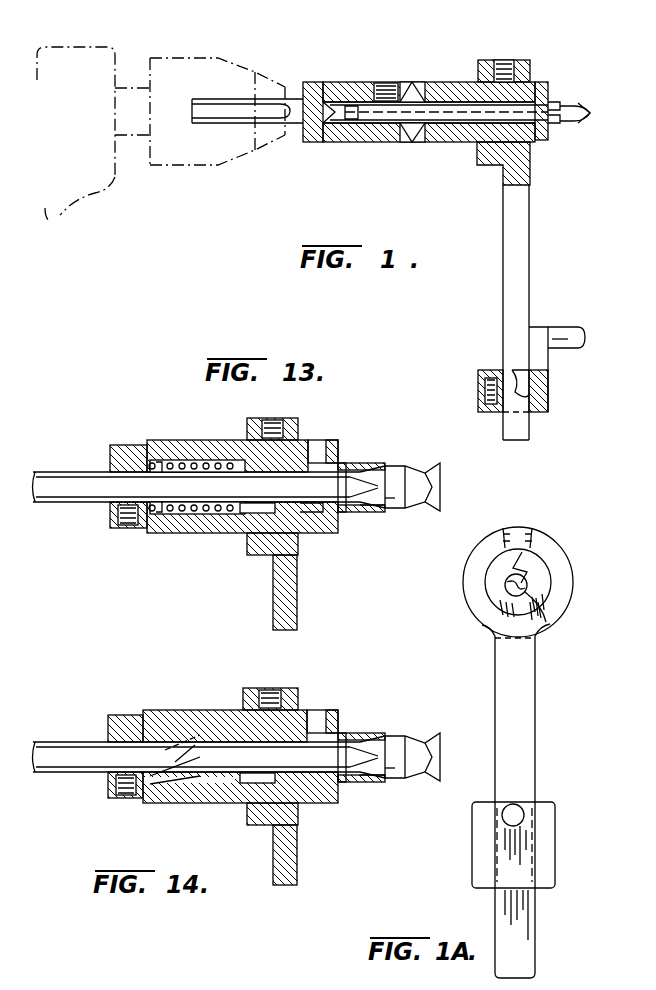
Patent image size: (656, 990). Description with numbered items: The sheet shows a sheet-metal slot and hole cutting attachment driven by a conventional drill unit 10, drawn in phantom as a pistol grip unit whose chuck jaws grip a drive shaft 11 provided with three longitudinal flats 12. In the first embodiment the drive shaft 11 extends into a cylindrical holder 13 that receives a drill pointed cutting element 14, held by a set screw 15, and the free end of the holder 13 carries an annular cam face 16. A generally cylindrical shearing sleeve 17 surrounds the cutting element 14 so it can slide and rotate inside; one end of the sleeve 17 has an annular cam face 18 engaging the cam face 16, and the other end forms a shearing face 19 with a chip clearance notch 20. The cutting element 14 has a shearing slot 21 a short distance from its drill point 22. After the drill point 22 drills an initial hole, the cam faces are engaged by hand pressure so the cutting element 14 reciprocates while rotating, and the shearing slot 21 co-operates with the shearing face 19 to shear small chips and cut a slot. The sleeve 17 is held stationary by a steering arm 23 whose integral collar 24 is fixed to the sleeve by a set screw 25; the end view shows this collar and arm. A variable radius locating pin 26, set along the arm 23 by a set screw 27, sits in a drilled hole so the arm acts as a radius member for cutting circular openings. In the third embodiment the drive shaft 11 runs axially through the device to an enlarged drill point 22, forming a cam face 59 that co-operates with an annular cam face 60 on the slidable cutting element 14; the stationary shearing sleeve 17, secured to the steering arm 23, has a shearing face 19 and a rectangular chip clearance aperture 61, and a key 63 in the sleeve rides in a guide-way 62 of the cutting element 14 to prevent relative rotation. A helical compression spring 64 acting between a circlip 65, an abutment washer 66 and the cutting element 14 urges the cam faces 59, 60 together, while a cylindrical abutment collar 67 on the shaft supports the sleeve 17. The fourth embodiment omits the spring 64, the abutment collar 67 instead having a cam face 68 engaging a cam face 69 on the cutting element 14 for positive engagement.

In FIG. 1, the drill unit 10 is at (118, 180).
In FIG. 1, the drive shaft 11 is at (270, 120).
In FIG. 13, the drive shaft 11 is at (48, 480).
In FIG. 14, the drive shaft 11 is at (48, 750).
In FIG. 1, the longitudinal flats 12 is at (236, 112).
In FIG. 1, the cylindrical holder 13 is at (312, 134).
In FIG. 1, the cutting element 14 is at (440, 108).
In FIG. 13, the cutting element 14 is at (326, 512).
In FIG. 1, the set screw 15 is at (388, 86).
In FIG. 1, the annular cam face 16 is at (408, 96).
In FIG. 1, the shearing sleeve 17 is at (455, 132).
In FIG. 13, the shearing sleeve 17 is at (175, 520).
In FIG. 14, the shearing sleeve 17 is at (183, 725).
In FIG. 1, the annular cam face 18 is at (410, 130).
In FIG. 1A, the shearing face 19 is at (535, 572).
In FIG. 13, the shearing face 19 is at (341, 463).
In FIG. 14, the shearing face 19 is at (341, 733).
In FIG. 1, the chip clearance notch 20 is at (552, 130).
In FIG. 1A, the chip clearance notch 20 is at (543, 623).
In FIG. 1, the shearing slot 21 is at (565, 118).
In FIG. 13, the shearing slot 21 is at (350, 466).
In FIG. 14, the shearing slot 21 is at (348, 736).
In FIG. 1, the drill point 22 is at (592, 113).
In FIG. 1A, the drill point 22 is at (520, 592).
In FIG. 13, the drill point 22 is at (432, 470).
In FIG. 14, the drill point 22 is at (432, 740).
In FIG. 1, the steering arm 23 is at (525, 232).
In FIG. 1A, the steering arm 23 is at (515, 727).
In FIG. 13, the steering arm 23 is at (273, 605).
In FIG. 14, the steering arm 23 is at (297, 872).
In FIG. 1, the collar 24 is at (530, 70).
In FIG. 1A, the collar 24 is at (540, 548).
In FIG. 13, the collar 24 is at (250, 428).
In FIG. 14, the collar 24 is at (258, 700).
In FIG. 1, the set screw 25 is at (505, 66).
In FIG. 1, the locating pin 26 is at (570, 335).
In FIG. 1A, the locating pin 26 is at (525, 812).
In FIG. 1, the set screw 27 is at (490, 372).
In FIG. 13, the cam face 59 is at (388, 512).
In FIG. 14, the cam face 59 is at (390, 762).
In FIG. 13, the annular cam face 60 is at (366, 512).
In FIG. 14, the annular cam face 60 is at (360, 783).
In FIG. 13, the chip clearance aperture 61 is at (320, 450).
In FIG. 14, the chip clearance aperture 61 is at (315, 720).
In FIG. 13, the guide-way 62 is at (275, 545).
In FIG. 14, the guide-way 62 is at (275, 815).
In FIG. 13, the key 63 is at (250, 514).
In FIG. 14, the key 63 is at (255, 785).
In FIG. 13, the helical compression spring 64 is at (190, 463).
In FIG. 13, the circlip 65 is at (151, 462).
In FIG. 13, the abutment washer 66 is at (160, 466).
In FIG. 13, the abutment collar 67 is at (123, 450).
In FIG. 14, the abutment collar 67 is at (115, 725).
In FIG. 14, the cam face 68 is at (160, 785).
In FIG. 14, the cam face 69 is at (200, 785).